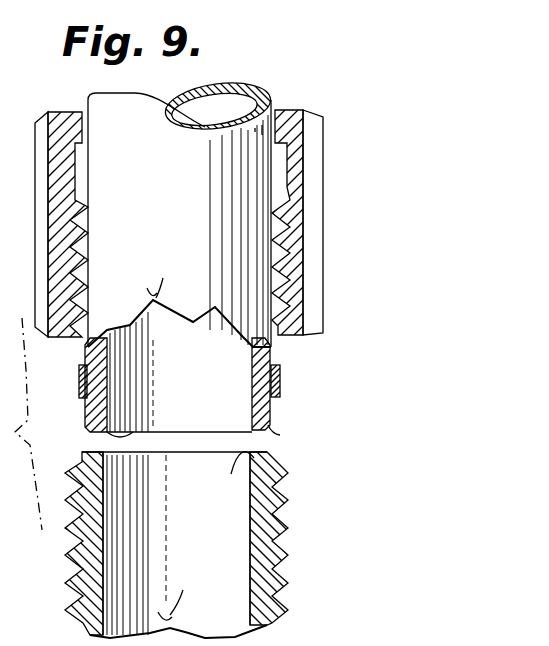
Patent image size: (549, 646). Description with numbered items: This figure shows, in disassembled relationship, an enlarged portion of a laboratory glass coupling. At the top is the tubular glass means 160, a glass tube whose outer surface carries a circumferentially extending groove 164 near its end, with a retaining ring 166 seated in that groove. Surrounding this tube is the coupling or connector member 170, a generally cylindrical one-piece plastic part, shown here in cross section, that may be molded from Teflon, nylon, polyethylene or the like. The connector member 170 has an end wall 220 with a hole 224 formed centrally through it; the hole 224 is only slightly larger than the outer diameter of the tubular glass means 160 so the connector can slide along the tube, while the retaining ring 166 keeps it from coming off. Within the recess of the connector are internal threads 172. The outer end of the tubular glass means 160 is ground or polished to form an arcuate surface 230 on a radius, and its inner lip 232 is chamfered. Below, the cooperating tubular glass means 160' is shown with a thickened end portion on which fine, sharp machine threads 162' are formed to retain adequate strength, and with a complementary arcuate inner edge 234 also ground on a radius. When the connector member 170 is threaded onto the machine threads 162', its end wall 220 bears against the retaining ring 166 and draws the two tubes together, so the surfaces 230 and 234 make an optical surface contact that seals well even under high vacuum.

The tubular glass means 160 is at (211, 203).
The tubular glass means 160' is at (222, 545).
The machine threads 162' is at (309, 538).
The groove 164 is at (100, 371).
The retaining ring 166 is at (80, 385).
The coupling or connector member 170 is at (330, 225).
The internal threads 172 is at (88, 255).
The end wall 220 is at (298, 110).
The hole 224 is at (258, 128).
The arcuate surface 230 is at (268, 428).
The inner lip 232 is at (138, 432).
The arcuate inner edge 234 is at (243, 452).